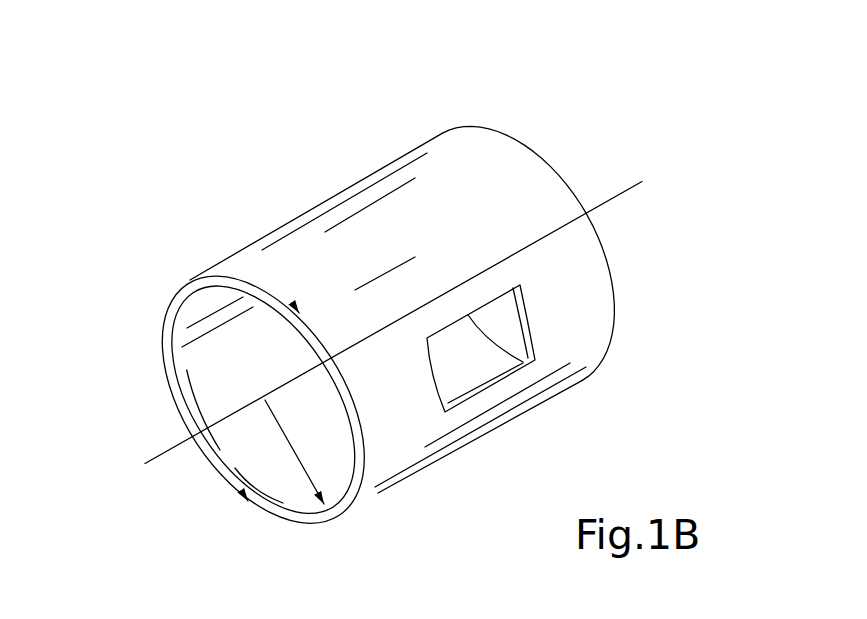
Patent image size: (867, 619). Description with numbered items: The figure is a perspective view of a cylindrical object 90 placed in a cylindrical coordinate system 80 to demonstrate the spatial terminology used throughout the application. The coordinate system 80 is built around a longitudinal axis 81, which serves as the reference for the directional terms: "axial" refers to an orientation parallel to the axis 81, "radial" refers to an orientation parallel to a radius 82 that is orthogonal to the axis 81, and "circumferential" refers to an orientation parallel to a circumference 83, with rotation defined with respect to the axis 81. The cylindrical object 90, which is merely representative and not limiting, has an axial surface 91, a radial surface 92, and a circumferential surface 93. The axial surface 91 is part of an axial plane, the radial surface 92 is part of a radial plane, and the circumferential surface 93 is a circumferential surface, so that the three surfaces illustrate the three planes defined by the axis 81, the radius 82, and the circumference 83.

The cylindrical coordinate system 80 is at (556, 142).
The longitudinal axis 81 is at (155, 460).
The radius 82 is at (300, 460).
The circumference 83 is at (173, 303).
The cylindrical object 90 is at (429, 129).
The axial surface 91 is at (512, 360).
The radial surface 92 is at (278, 513).
The circumferential surface 93 is at (367, 226).